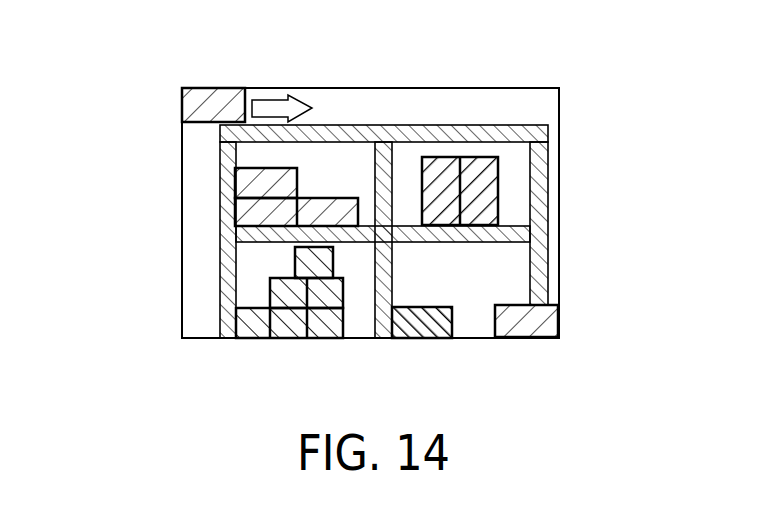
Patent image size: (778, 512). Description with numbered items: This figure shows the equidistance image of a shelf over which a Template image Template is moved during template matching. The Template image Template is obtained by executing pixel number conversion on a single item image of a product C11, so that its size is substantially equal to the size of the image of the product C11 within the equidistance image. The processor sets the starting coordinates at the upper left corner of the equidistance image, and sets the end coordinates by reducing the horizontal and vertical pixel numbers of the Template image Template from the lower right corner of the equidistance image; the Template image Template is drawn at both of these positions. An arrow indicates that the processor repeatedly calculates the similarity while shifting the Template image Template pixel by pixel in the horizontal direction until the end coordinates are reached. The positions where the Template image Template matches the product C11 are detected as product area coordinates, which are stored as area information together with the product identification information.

The product C11 is at (222, 150).
The template image Template is at (198, 96).